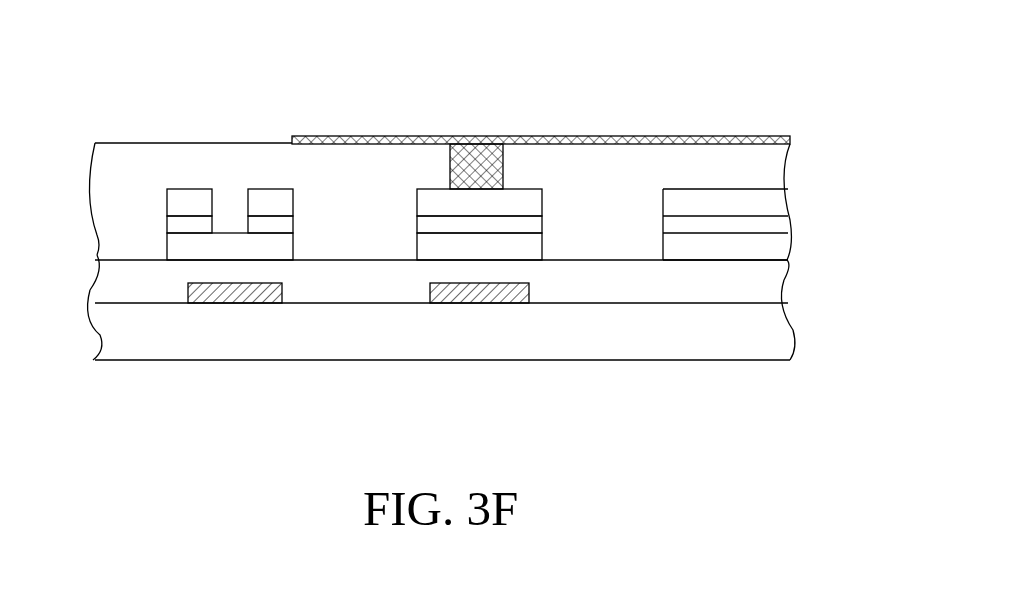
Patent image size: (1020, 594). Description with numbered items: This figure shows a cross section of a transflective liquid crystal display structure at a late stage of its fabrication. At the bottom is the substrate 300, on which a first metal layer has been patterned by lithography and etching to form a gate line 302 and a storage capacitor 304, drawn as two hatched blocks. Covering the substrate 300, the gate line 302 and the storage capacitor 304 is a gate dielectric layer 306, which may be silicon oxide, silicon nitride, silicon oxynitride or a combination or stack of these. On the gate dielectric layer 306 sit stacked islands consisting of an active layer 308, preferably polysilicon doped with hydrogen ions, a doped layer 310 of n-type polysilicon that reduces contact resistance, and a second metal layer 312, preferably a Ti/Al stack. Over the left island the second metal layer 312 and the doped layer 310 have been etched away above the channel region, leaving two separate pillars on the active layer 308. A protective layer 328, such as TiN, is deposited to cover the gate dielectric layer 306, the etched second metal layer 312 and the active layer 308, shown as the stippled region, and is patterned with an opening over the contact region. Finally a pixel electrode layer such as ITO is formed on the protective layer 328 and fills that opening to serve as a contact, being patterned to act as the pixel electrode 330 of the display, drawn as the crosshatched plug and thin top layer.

The substrate 300 is at (765, 333).
The gate line 302 is at (238, 293).
The storage capacitor 304 is at (487, 293).
The gate dielectric layer 306 is at (765, 280).
The active layer 308 is at (100, 246).
The doped layer 310 is at (100, 222).
The second metal layer 312 is at (100, 198).
The protective layer 328 is at (118, 165).
The pixel electrode 330 is at (476, 145).